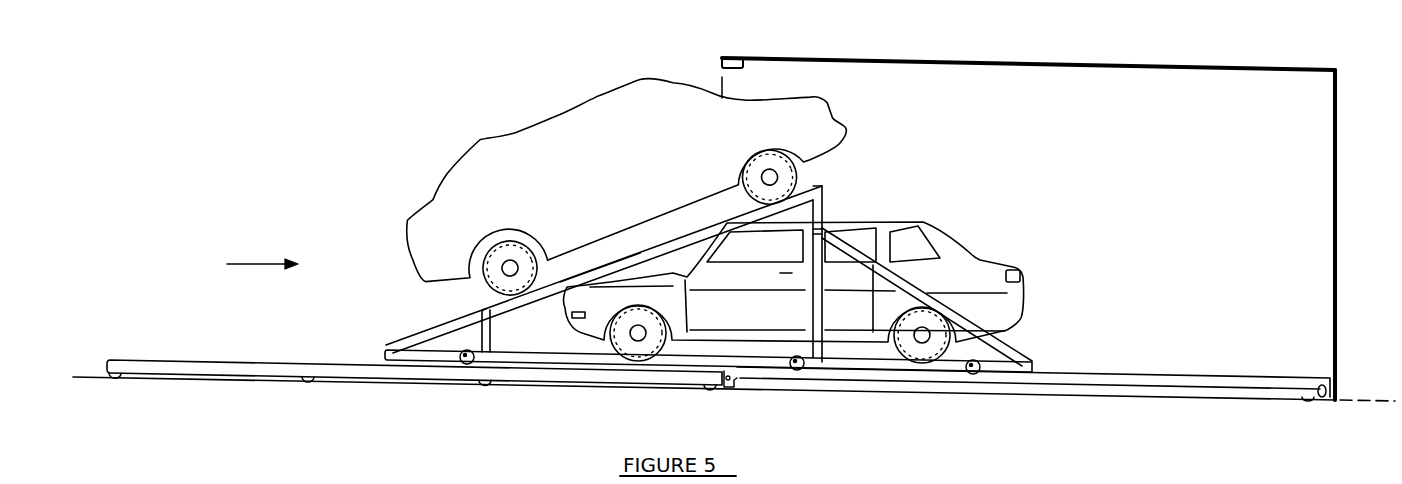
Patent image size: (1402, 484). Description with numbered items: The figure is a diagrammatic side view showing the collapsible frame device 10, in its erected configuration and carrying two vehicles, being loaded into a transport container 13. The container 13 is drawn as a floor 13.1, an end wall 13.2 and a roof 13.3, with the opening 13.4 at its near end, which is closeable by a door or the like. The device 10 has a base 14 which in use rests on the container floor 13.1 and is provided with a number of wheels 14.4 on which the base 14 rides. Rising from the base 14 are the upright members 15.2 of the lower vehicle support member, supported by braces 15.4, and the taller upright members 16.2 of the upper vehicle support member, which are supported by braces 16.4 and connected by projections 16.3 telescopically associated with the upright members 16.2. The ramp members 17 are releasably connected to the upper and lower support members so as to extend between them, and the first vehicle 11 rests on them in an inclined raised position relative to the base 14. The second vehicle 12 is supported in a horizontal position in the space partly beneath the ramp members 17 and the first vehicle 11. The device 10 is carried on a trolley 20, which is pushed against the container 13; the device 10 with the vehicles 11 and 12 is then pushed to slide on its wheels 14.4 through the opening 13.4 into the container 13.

The collapsible frame device 10 is at (735, 258).
The first vehicle 11 is at (590, 114).
The second vehicle 12 is at (985, 265).
The transport container 13 is at (1024, 236).
The floor 13.1 is at (1183, 378).
The wall 13.2 is at (1252, 107).
The roof 13.3 is at (1105, 63).
The opening 13.4 is at (738, 80).
The base 14 is at (745, 377).
The wheels 14.4 is at (797, 370).
The upright members 15.2 is at (488, 333).
The braces 15.4 is at (426, 332).
The upright members 16.2 is at (813, 307).
The projections 16.3 is at (823, 209).
The braces 16.4 is at (981, 323).
The ramp members 17 is at (603, 264).
The trolley 20 is at (269, 380).